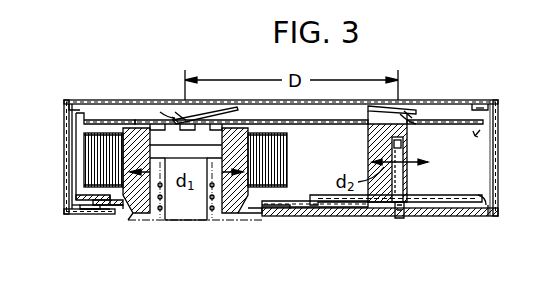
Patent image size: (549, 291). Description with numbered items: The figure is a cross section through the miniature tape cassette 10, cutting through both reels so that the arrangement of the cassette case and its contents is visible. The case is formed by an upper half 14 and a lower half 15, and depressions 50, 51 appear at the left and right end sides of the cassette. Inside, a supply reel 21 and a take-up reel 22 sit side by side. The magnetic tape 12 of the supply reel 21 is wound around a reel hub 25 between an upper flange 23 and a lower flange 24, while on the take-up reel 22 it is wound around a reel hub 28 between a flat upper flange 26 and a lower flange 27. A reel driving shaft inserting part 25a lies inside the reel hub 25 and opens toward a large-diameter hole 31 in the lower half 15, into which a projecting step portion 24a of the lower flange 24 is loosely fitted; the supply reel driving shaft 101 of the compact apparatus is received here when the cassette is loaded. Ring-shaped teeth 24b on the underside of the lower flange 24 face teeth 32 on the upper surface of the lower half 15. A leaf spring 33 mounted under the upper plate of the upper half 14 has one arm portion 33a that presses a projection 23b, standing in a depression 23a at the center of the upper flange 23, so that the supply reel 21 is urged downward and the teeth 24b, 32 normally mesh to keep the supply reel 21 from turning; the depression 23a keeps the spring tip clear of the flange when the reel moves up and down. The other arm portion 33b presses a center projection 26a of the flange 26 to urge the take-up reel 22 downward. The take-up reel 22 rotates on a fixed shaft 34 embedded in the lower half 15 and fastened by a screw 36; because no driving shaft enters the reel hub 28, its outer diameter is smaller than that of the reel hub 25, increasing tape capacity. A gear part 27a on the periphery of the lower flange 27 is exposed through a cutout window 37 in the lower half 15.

The tape cassette 10 is at (451, 63).
The magnetic tape 12 is at (88, 157).
The upper half 14 is at (498, 124).
The lower half 15 is at (70, 210).
The supply reel 21 is at (104, 118).
The take-up reel 22 is at (498, 148).
The upper flange 23 is at (78, 114).
The depression 23a is at (165, 112).
The projection 23b is at (200, 110).
The lower flange 24 is at (80, 196).
The projecting step portion 24a is at (112, 206).
The teeth 24b is at (292, 214).
The reel hub 25 is at (282, 166).
The reel driving shaft inserting part 25a is at (220, 220).
The upper flange 26 is at (457, 120).
The center projection 26a is at (368, 106).
The lower flange 27 is at (470, 195).
The gear part 27a is at (498, 211).
The reel hub 28 is at (372, 146).
The hole 31 is at (250, 216).
The teeth 32 is at (95, 212).
The leaf spring 33 is at (252, 118).
The arm portion 33a is at (176, 118).
The arm portion 33b is at (412, 110).
The fixed shaft 34 is at (404, 150).
The screw 36 is at (401, 216).
The cutout window 37 is at (490, 218).
The depression 50 is at (70, 100).
The depression 51 is at (487, 104).
The supply reel driving shaft 101 is at (141, 222).